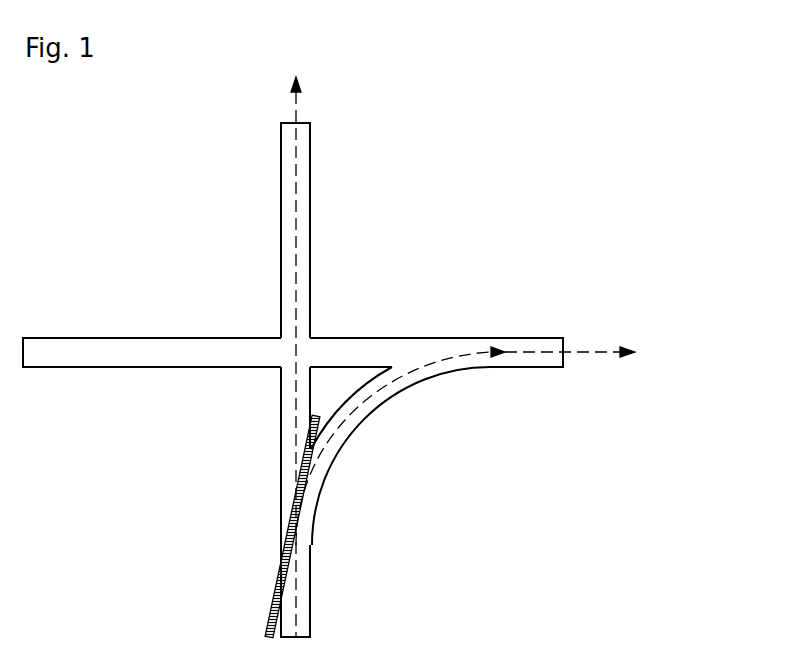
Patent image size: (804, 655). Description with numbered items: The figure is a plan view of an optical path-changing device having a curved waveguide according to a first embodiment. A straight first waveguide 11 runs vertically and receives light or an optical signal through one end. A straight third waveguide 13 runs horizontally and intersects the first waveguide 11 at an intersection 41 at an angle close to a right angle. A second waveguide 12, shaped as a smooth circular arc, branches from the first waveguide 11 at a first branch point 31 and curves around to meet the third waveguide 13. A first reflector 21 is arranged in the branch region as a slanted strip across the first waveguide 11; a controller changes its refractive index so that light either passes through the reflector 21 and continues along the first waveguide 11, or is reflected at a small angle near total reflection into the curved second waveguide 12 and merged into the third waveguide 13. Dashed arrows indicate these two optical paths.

The first waveguide 11 is at (287, 395).
The second waveguide 12 is at (393, 397).
The third waveguide 13 is at (123, 347).
The first reflector 21 is at (275, 578).
The first branch point 31 is at (295, 542).
The intersection 41 is at (295, 352).